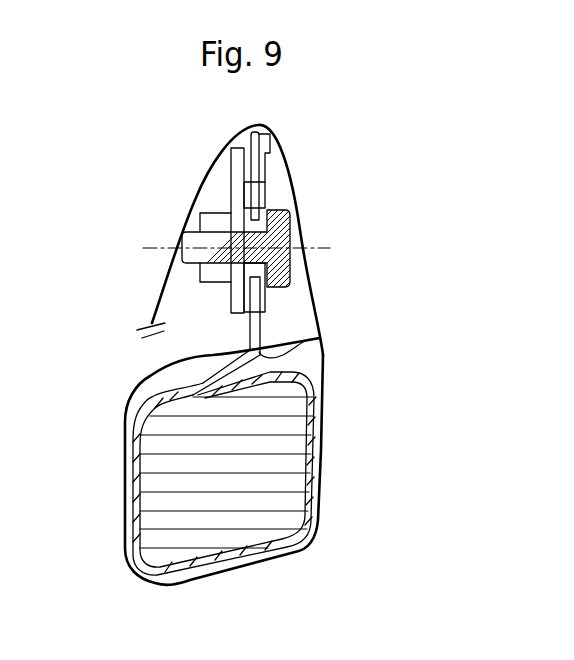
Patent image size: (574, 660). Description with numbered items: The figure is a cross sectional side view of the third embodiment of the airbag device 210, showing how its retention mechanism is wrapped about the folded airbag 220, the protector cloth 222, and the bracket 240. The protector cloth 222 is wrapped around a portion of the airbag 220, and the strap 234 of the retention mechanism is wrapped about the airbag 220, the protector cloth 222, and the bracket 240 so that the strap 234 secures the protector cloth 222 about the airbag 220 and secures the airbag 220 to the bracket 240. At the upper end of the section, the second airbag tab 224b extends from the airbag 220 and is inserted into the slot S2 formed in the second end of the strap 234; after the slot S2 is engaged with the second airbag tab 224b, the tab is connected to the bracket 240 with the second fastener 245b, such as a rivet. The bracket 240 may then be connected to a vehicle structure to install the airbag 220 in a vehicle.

The airbag device 210 is at (329, 161).
The bracket 240 is at (231, 169).
The second fastener 245b is at (290, 233).
The second airbag tab 224b is at (249, 333).
The slot S2 is at (301, 345).
The protector cloth 222 is at (322, 424).
The airbag 220 is at (298, 462).
The strap 234 is at (318, 507).